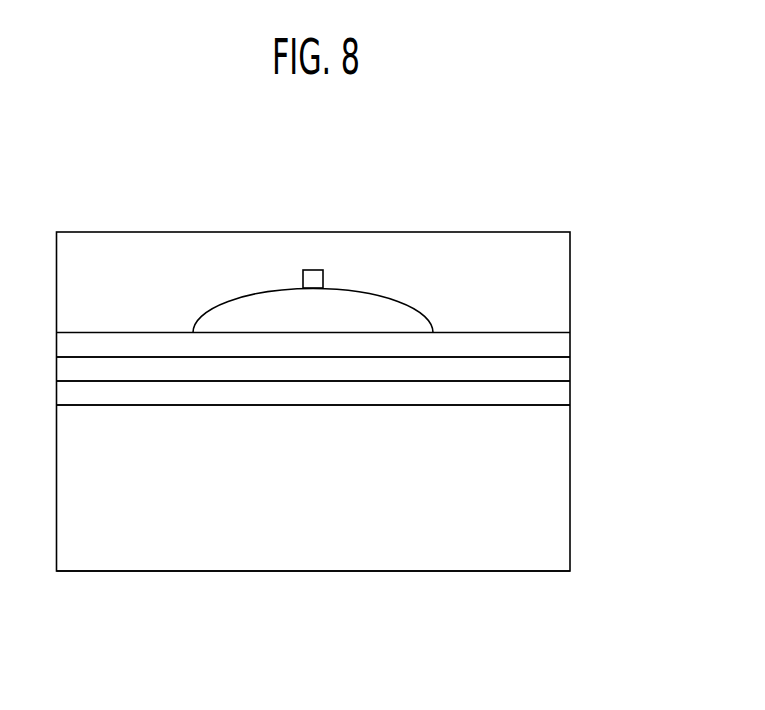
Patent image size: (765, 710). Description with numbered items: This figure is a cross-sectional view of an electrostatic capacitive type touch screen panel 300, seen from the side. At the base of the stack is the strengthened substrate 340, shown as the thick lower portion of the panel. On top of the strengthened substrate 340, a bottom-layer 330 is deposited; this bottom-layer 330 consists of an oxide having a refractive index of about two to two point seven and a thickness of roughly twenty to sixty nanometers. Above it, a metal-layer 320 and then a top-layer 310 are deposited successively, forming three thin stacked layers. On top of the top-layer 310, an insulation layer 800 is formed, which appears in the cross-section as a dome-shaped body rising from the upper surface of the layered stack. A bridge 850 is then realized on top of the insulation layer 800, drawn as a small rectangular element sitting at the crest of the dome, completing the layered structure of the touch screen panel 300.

The electrostatic capacitive type TSP 300 is at (574, 283).
The top-layer 310 is at (574, 344).
The metal-layer 320 is at (574, 368).
The bottom-layer 330 is at (574, 393).
The strengthened substrate 340 is at (574, 499).
The insulation layer 800 is at (273, 318).
The bridge 850 is at (315, 265).